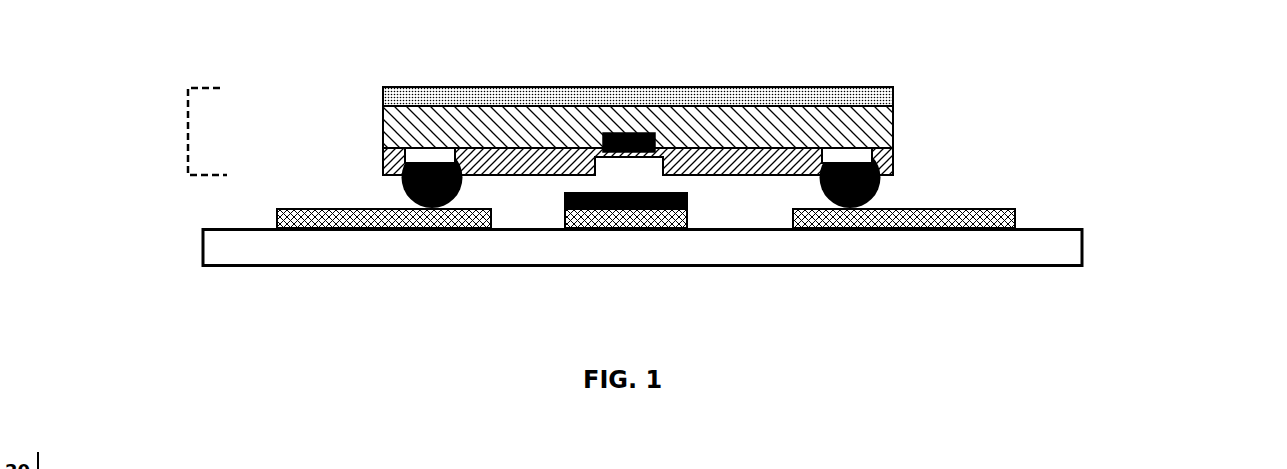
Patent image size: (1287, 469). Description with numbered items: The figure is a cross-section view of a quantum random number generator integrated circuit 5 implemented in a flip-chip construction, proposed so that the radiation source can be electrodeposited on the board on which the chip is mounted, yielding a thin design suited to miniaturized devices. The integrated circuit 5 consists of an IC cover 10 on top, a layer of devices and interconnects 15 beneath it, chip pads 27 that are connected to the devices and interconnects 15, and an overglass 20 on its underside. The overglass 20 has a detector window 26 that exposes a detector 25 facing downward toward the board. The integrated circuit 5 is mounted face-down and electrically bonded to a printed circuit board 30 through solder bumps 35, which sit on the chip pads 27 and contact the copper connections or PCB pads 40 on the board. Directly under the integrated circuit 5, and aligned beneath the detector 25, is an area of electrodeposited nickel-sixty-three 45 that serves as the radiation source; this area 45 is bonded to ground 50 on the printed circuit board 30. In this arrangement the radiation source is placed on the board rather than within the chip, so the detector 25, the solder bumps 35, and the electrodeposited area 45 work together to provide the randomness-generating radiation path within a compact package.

The integrated circuit 5 is at (188, 123).
The IC cover 10 is at (383, 87).
The devices and interconnects 15 is at (383, 130).
The overglass 20 is at (383, 160).
The detector 25 is at (620, 134).
The detector window 26 is at (638, 165).
The chip pads 27 is at (455, 163).
The printed circuit board 30 is at (1082, 248).
The solder bumps 35 is at (878, 195).
The PCB pads 40 is at (1015, 210).
The electrodeposited 63Ni 45 is at (563, 207).
The ground 50 is at (650, 257).